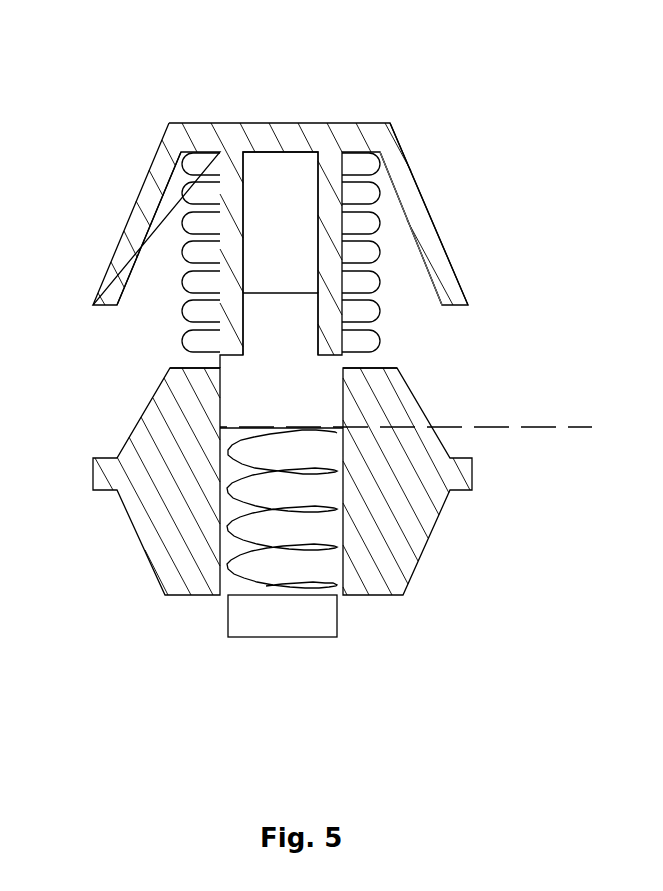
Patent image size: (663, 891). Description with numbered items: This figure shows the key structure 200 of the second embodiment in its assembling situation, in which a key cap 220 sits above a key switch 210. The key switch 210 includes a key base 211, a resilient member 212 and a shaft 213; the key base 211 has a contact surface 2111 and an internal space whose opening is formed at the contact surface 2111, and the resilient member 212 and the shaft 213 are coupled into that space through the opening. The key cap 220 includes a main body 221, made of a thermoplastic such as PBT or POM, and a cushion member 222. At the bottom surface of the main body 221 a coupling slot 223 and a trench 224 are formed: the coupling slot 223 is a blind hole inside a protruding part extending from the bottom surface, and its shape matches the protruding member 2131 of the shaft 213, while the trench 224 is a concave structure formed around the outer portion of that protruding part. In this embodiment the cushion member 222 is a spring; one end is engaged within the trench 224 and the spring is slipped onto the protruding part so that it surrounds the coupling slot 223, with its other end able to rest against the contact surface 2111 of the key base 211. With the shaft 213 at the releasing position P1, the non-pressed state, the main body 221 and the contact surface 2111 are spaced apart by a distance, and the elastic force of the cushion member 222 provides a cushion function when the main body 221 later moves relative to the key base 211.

The key structure 200 is at (115, 47).
The key switch 210 is at (286, 503).
The key base 211 is at (150, 538).
The contact surface 2111 is at (377, 367).
The resilient member 212 is at (313, 578).
The shaft 213 is at (290, 402).
The protruding member 2131 is at (273, 330).
The key cap 220 is at (318, 210).
The main body 221 is at (431, 241).
The cushion member 222 is at (373, 206).
The coupling slot 223 is at (283, 187).
The trench 224 is at (402, 250).
The releasing position P1 is at (420, 429).